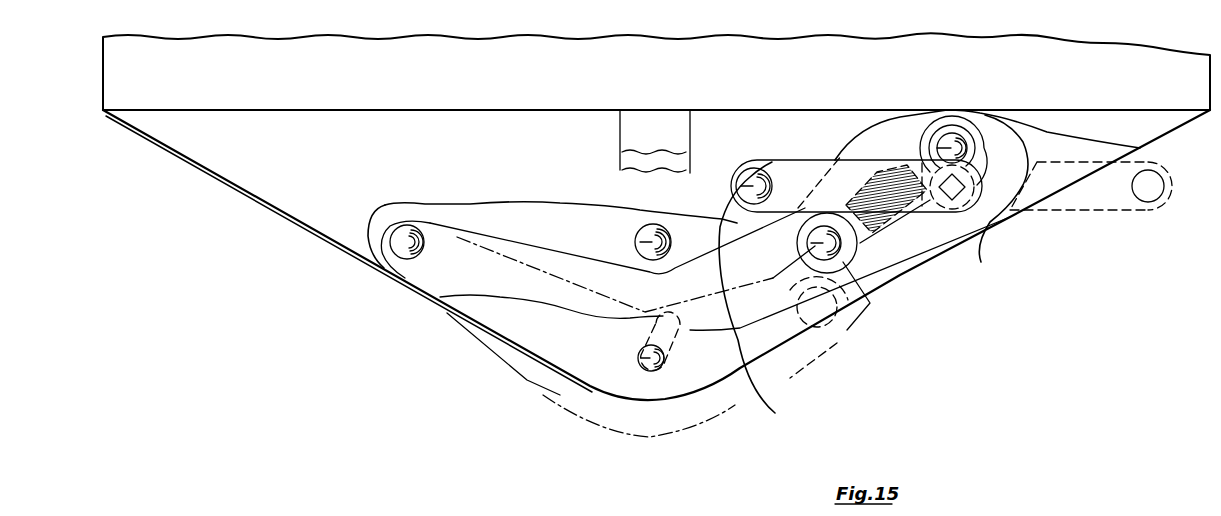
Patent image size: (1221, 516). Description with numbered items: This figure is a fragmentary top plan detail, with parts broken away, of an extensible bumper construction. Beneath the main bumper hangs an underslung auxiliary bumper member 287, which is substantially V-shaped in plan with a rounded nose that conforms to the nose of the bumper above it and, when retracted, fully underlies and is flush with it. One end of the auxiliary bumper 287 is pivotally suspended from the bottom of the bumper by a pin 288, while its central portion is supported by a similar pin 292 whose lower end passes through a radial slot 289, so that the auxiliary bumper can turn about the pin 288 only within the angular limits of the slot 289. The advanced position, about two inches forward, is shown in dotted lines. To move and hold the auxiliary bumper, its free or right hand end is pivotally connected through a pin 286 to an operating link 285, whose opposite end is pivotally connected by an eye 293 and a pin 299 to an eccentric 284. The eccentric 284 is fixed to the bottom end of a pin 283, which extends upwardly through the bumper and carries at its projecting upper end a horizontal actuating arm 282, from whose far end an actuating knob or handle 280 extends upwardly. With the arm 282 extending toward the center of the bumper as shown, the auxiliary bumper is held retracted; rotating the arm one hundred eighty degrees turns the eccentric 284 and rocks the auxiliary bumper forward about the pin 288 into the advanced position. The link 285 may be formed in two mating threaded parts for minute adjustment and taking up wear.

The actuating knob 280 is at (929, 269).
The horizontal actuating arm 282 is at (925, 200).
The pin 283 is at (983, 240).
The eccentric 284 is at (960, 205).
The operating link 285 is at (882, 207).
The pin 286 is at (802, 257).
The auxiliary bumper member 287 is at (458, 267).
The pin 288 is at (398, 243).
The radial slot 289 is at (660, 318).
The pin 292 is at (645, 357).
The eye 293 is at (977, 155).
The pin 299 is at (1140, 149).